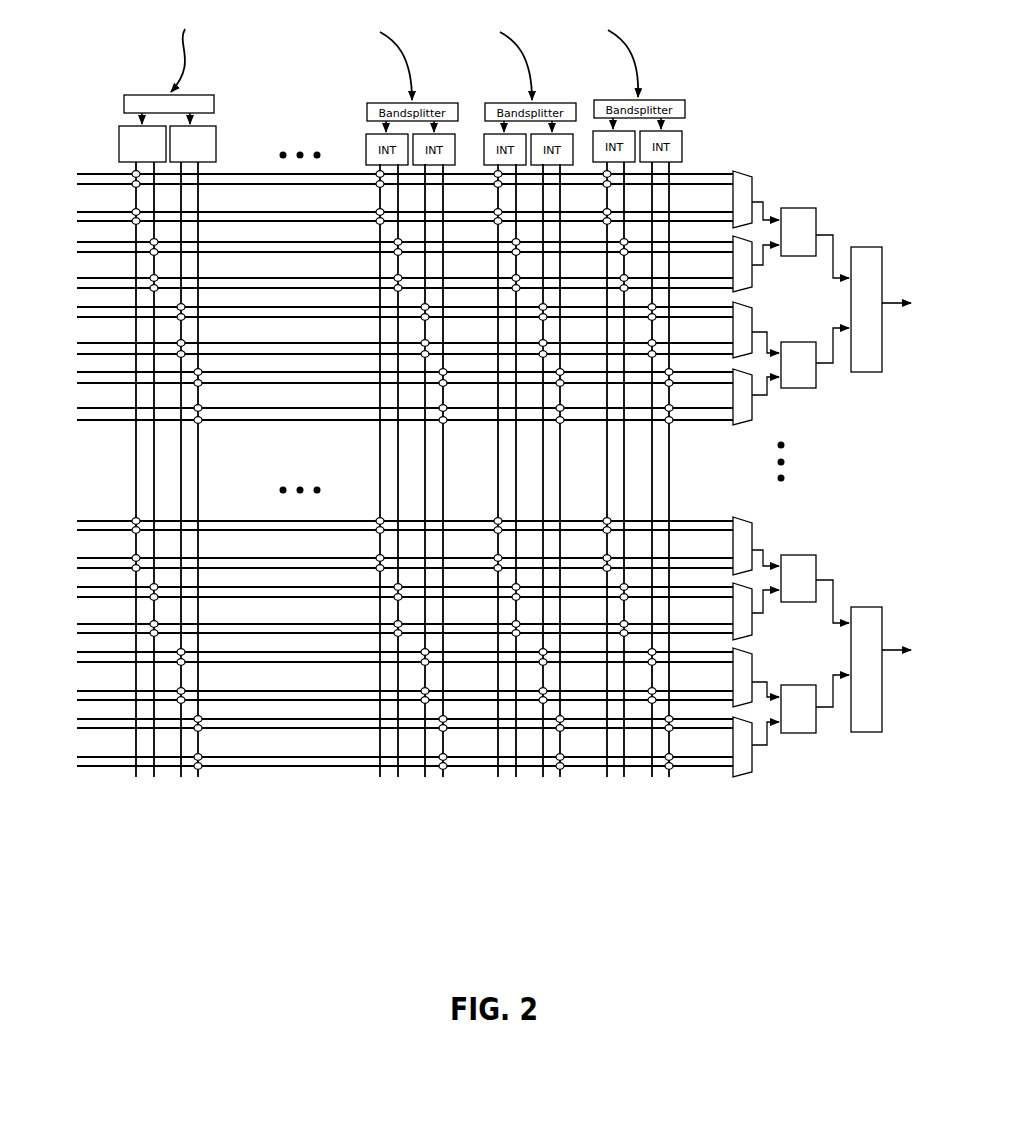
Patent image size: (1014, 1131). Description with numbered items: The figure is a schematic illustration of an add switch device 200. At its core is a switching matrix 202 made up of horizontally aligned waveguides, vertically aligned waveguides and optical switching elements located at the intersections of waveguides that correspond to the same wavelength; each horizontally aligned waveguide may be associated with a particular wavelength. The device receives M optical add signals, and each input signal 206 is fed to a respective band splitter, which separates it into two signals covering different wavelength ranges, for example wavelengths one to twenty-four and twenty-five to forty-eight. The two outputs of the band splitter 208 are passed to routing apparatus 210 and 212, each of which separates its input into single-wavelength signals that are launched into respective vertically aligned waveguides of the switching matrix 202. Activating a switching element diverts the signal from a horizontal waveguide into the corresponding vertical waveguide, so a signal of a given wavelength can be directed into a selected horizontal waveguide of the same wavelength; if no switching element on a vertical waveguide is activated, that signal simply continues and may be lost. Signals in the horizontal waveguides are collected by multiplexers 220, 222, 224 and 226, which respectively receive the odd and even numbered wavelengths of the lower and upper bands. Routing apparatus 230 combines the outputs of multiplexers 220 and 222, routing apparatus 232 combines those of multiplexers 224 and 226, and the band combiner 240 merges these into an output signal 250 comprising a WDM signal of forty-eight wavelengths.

The add switch device 200 is at (511, 971).
The switching matrix 202 is at (366, 804).
The input signal 206 is at (404, 51).
The band splitter 208 is at (215, 103).
The routing apparatus 210 is at (119, 137).
The routing apparatus 212 is at (217, 142).
The multiplexer 220 is at (750, 172).
The multiplexer 222 is at (753, 289).
The multiplexer 224 is at (755, 323).
The multiplexer 226 is at (753, 422).
The routing apparatus 230 is at (816, 223).
The routing apparatus 232 is at (817, 375).
The band combiner 240 is at (872, 247).
The output signal 250 is at (890, 305).